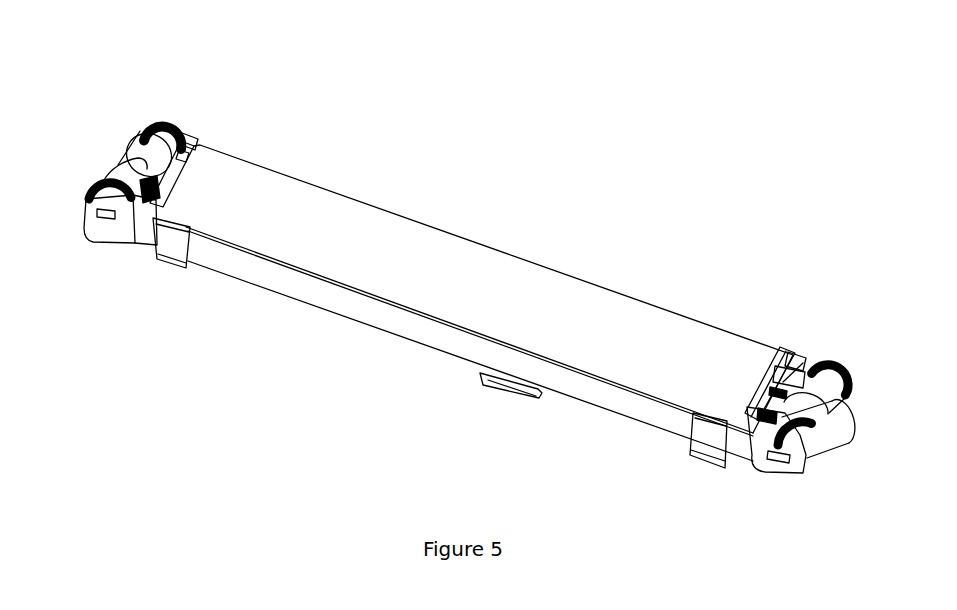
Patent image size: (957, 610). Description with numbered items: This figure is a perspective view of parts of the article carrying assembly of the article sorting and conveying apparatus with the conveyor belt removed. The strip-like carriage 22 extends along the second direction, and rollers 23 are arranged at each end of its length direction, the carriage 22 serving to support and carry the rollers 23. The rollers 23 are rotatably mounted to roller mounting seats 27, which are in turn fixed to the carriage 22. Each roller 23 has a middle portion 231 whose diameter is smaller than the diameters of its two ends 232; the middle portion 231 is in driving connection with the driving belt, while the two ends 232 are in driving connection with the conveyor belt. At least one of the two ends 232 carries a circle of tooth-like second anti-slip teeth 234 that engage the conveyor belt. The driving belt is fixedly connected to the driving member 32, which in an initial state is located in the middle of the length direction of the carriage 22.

The carriage 22 is at (418, 241).
The rollers 23 is at (148, 131).
The middle portion 231 is at (107, 129).
The two ends 232 is at (151, 145).
The second anti-slip teeth 234 is at (167, 127).
The roller mounting seats 27 is at (190, 138).
The driving member 32 is at (492, 384).